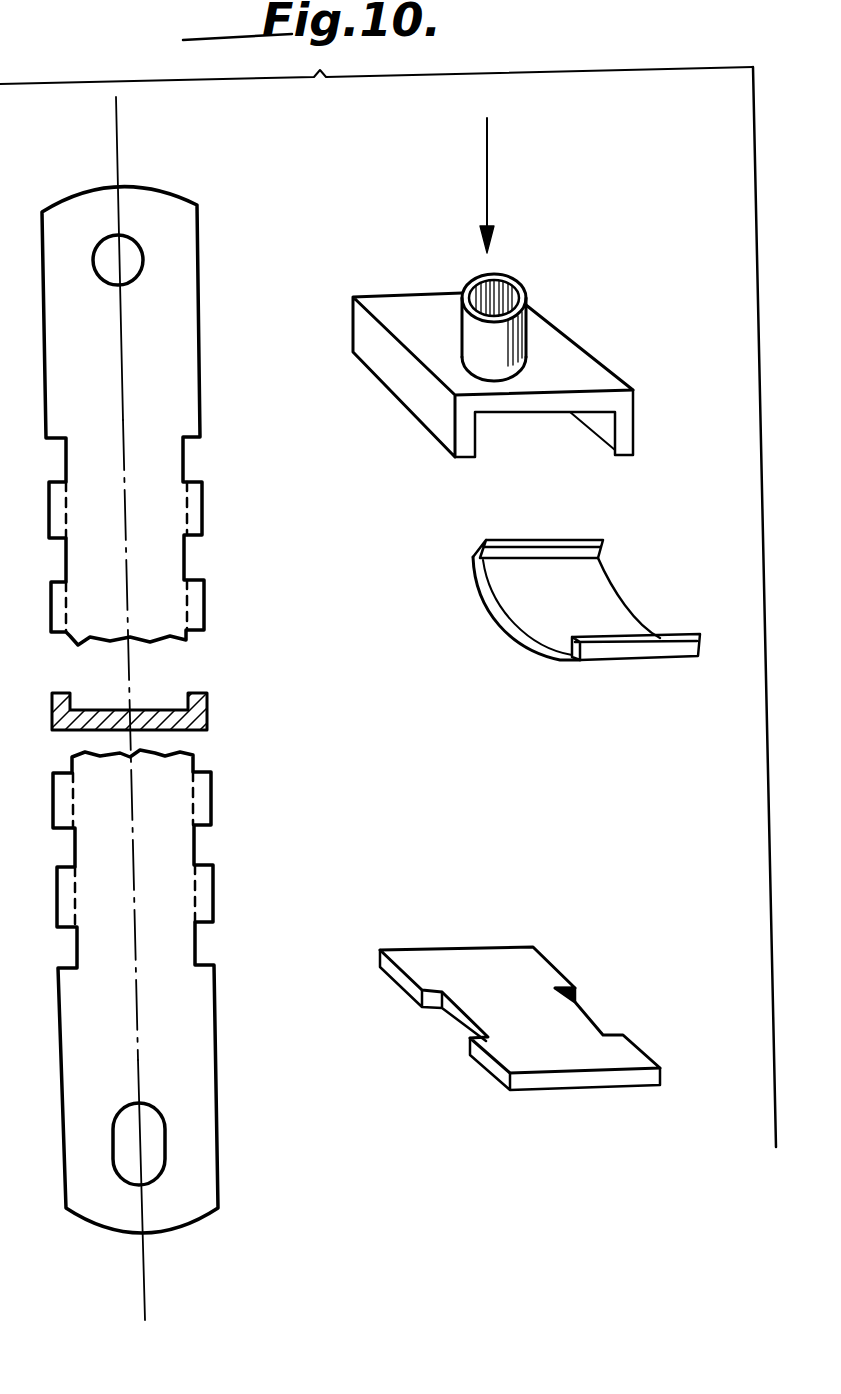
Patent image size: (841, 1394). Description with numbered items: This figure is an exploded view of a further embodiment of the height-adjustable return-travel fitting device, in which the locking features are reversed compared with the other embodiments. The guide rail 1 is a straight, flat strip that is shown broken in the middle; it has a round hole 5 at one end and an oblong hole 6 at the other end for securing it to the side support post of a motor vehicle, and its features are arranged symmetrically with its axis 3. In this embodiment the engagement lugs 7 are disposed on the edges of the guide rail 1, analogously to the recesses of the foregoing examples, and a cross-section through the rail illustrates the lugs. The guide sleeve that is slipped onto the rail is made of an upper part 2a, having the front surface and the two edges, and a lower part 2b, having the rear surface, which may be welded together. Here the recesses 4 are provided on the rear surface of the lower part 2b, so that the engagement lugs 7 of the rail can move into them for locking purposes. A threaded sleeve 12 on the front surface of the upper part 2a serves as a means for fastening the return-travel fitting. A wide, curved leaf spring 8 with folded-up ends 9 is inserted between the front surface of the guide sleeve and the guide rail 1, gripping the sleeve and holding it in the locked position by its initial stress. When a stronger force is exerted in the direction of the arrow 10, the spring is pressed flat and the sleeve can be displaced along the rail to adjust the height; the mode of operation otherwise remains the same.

The guide rail 1 is at (185, 358).
The upper part 2a is at (583, 366).
The lower part 2b is at (540, 968).
The axis 3 is at (117, 143).
The recesses 4 is at (595, 1020).
The round hole 5 is at (138, 252).
The oblong hole 6 is at (158, 1140).
The engagement lugs 7 is at (205, 510).
The leaf spring 8 is at (612, 601).
The folded-up ends 9 is at (652, 648).
The arrow 10 is at (487, 177).
The threaded sleeve 12 is at (526, 300).